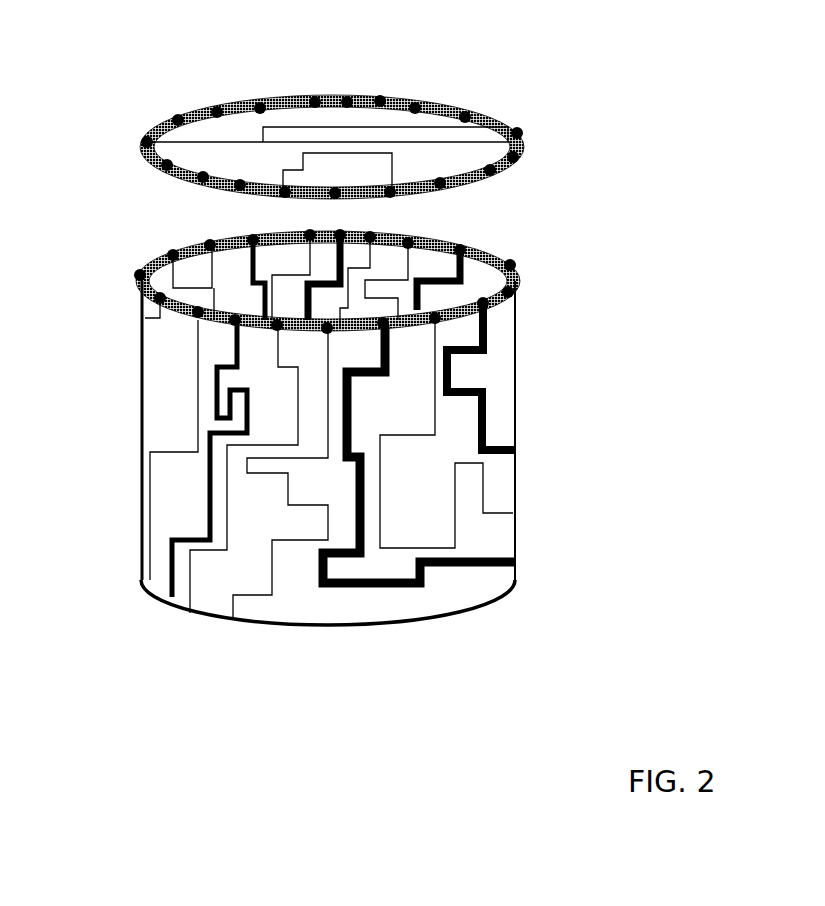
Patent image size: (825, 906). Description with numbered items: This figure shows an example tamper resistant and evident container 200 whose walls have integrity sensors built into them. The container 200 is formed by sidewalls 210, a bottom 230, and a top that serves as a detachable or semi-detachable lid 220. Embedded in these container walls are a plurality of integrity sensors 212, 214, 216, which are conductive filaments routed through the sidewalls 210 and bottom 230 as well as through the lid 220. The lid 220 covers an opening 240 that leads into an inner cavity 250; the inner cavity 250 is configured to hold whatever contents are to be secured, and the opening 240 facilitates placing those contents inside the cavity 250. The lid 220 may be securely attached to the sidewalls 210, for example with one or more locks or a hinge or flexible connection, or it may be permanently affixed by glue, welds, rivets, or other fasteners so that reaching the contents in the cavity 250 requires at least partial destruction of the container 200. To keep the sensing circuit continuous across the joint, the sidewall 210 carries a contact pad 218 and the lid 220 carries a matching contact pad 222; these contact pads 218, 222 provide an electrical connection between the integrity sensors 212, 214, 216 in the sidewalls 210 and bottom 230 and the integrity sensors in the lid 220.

The tamper evident container 200 is at (704, 217).
The sidewalls 210 is at (385, 495).
The integrity sensor 212 is at (513, 560).
The integrity sensor 214 is at (497, 510).
The integrity sensor 216 is at (175, 538).
The contact pad 218 is at (382, 244).
The lid 220 is at (391, 112).
The contact pad 222 is at (527, 133).
The bottom 230 is at (437, 615).
The opening 240 is at (515, 231).
The inner cavity 250 is at (181, 247).